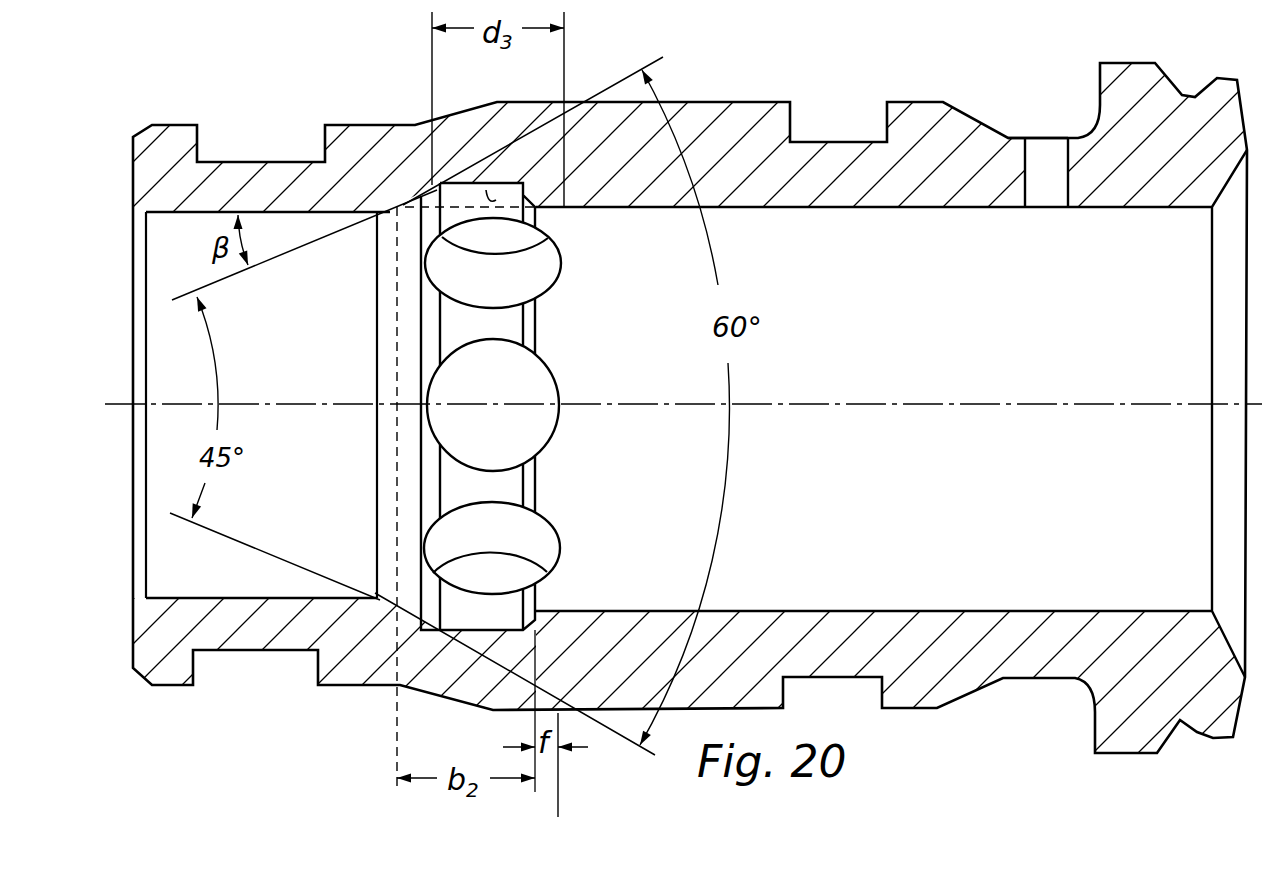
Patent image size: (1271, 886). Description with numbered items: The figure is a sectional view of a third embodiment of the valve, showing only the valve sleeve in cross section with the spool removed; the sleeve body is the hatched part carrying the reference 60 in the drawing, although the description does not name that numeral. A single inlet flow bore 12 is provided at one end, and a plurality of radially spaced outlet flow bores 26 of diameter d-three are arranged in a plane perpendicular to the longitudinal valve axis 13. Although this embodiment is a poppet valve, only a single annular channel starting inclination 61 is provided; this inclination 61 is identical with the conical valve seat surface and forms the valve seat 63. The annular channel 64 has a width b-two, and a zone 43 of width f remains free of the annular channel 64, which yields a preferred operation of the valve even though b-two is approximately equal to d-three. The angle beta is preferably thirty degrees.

The inlet flow bore 12 is at (166, 598).
The longitudinal valve axis 13 is at (931, 412).
The outlet flow bores 26 is at (552, 136).
The zone 43 is at (556, 794).
The housing sleeve 60 is at (740, 124).
The annular channel starting inclination 61 is at (386, 210).
The valve seat 63 is at (393, 216).
The annular channel 64 is at (492, 193).